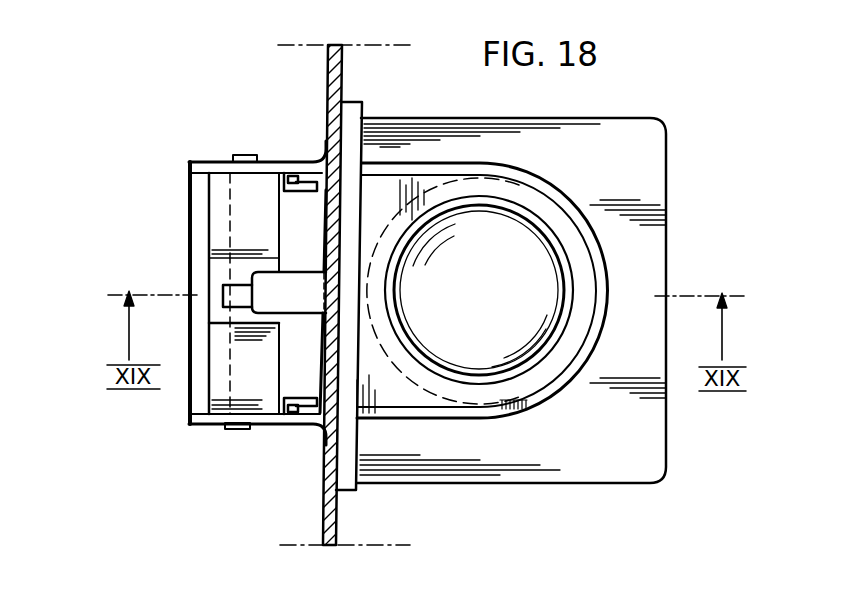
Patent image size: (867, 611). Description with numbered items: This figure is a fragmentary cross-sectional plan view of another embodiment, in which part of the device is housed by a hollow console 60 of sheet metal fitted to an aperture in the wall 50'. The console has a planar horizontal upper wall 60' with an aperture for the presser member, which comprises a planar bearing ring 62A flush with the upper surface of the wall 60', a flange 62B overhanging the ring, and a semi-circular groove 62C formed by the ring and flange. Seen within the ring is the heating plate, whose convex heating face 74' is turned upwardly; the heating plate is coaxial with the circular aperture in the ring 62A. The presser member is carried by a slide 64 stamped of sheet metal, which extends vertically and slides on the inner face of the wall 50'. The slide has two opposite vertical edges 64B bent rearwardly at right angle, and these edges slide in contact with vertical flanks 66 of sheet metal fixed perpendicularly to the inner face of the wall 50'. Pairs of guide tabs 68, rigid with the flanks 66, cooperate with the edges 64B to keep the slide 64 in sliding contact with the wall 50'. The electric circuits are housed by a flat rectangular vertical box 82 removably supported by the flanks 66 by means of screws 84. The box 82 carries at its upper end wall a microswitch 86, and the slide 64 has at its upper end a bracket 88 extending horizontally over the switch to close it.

The wall 50' is at (383, 295).
The hollow console 60 is at (511, 331).
The planar horizontal upper wall 60' is at (497, 114).
The planar bearing ring 62A is at (556, 369).
The flange 62B is at (493, 407).
The semi-circular groove 62C is at (402, 367).
The convex heating face 74' is at (470, 273).
The slide 64 is at (322, 333).
The vertical edges 64B is at (300, 177).
The vertical flanks 66 is at (200, 162).
The guide tabs 68 is at (275, 178).
The flat rectangular vertical box 82 is at (225, 191).
The screws 84 is at (233, 158).
The microswitch 86 is at (223, 302).
The bracket 88 is at (292, 283).